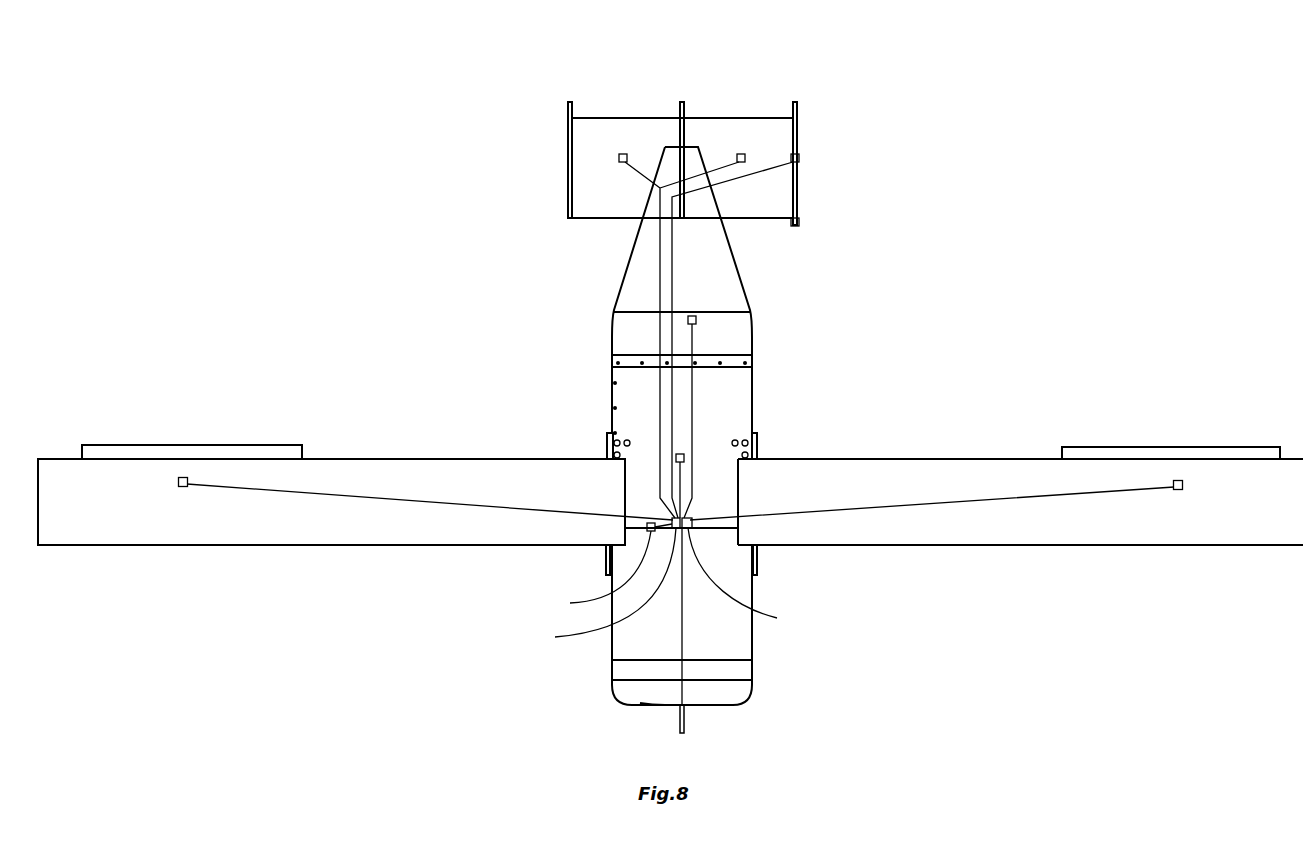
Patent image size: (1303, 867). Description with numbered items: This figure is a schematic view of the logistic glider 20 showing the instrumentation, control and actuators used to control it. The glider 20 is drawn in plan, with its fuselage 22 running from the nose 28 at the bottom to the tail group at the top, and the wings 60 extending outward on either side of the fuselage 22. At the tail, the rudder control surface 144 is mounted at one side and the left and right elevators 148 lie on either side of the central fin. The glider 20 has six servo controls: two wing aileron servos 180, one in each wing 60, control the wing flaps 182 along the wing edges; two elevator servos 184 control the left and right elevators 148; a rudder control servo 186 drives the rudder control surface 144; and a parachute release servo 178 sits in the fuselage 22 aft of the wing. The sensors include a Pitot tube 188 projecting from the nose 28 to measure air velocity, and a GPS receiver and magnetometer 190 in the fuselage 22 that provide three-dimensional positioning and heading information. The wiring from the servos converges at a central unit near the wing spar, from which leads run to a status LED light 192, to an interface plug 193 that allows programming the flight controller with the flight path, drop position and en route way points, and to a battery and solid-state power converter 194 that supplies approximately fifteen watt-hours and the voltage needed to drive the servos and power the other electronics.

The logistic glider 20 is at (878, 362).
The fuselage 22 is at (752, 380).
The nose 28 is at (717, 705).
The wing 60 is at (450, 459).
The rudder control surface 144 is at (795, 102).
The elevators 148 is at (705, 117).
The parachute release servo 178 is at (696, 320).
The wing aileron servos 180 is at (183, 477).
The wing flaps 182 is at (238, 445).
The elevator servos 184 is at (623, 154).
The rudder control servo 186 is at (799, 158).
The Pitot tube 188 is at (678, 722).
The GPS receiver and magnetometer 190 is at (683, 454).
The status LED light 192 is at (747, 573).
The interface plug 193 is at (599, 583).
The battery and solid-state power converter 194 is at (603, 569).